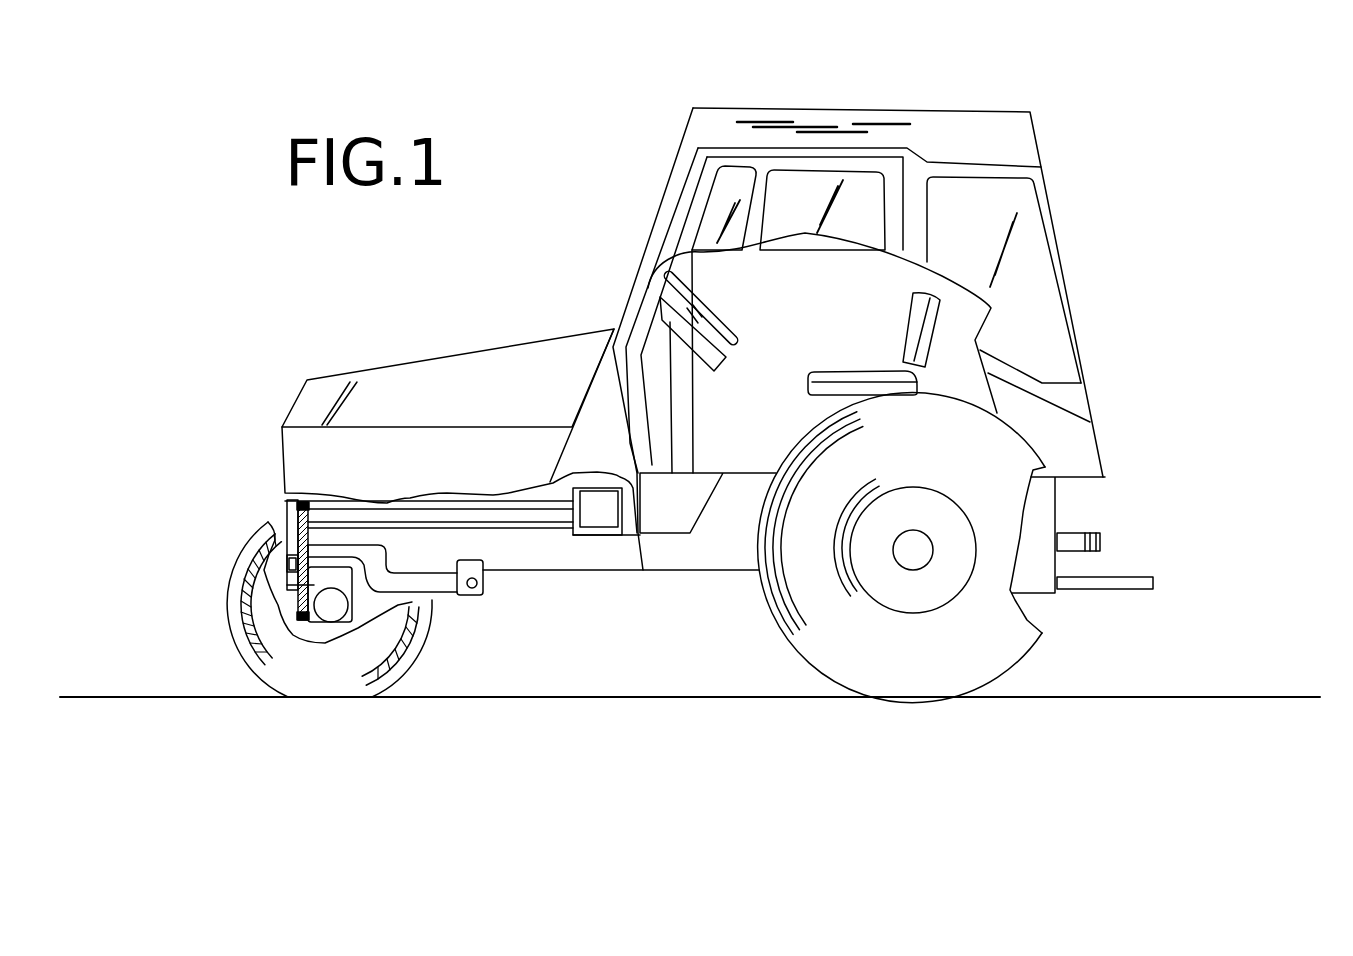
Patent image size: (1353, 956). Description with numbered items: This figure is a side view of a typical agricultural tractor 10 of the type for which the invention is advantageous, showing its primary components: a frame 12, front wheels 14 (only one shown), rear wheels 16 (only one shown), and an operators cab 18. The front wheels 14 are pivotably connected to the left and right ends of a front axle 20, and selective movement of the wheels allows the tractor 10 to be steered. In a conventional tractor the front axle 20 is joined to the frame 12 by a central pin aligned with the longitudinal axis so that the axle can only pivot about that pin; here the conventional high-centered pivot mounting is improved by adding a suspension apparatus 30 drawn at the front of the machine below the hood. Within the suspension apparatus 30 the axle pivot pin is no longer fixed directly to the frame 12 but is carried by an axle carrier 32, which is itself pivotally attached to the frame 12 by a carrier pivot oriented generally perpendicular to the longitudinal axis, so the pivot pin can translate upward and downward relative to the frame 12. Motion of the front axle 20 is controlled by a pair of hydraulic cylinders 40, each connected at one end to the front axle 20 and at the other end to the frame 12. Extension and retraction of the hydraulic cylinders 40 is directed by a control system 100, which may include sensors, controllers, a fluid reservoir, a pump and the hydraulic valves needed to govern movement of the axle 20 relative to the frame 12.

The agricultural tractor 10 is at (512, 289).
The frame 12 is at (717, 557).
The front wheels 14 is at (228, 608).
The rear wheels 16 is at (973, 677).
The operators cab 18 is at (660, 210).
The front axle 20 is at (337, 627).
The suspension apparatus 30 is at (455, 620).
The axle carrier 32 is at (427, 577).
The hydraulic cylinders 40 is at (295, 527).
The control system 100 is at (600, 518).